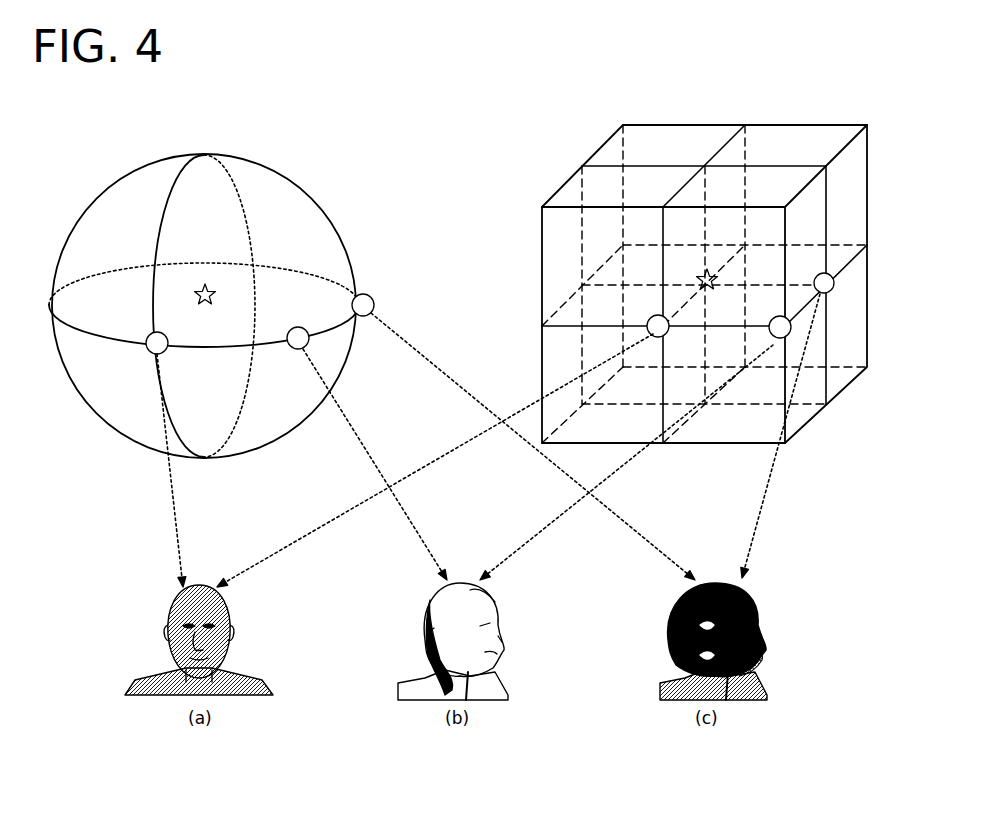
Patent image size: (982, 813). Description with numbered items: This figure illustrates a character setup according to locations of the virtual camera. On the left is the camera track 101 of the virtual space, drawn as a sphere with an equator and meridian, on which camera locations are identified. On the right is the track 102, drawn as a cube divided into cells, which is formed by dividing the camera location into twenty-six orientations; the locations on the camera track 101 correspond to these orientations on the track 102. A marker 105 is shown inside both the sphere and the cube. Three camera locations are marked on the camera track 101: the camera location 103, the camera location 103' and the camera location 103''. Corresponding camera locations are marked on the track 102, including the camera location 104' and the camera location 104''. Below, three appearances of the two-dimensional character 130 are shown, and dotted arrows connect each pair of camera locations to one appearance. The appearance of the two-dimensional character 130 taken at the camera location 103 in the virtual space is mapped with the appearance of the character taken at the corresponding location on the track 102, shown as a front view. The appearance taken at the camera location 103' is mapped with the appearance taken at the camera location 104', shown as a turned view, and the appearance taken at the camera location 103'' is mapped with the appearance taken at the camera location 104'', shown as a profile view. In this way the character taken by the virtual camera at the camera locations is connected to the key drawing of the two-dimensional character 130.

The camera track 101 is at (330, 212).
The track 102 is at (544, 252).
The camera location 103 is at (137, 365).
The camera location 103' is at (286, 363).
The camera location 103'' is at (383, 284).
The camera location 104' is at (790, 347).
The camera location 104'' is at (774, 324).
The object/star marker 105 is at (217, 300).
The 2D character 130 is at (231, 626).